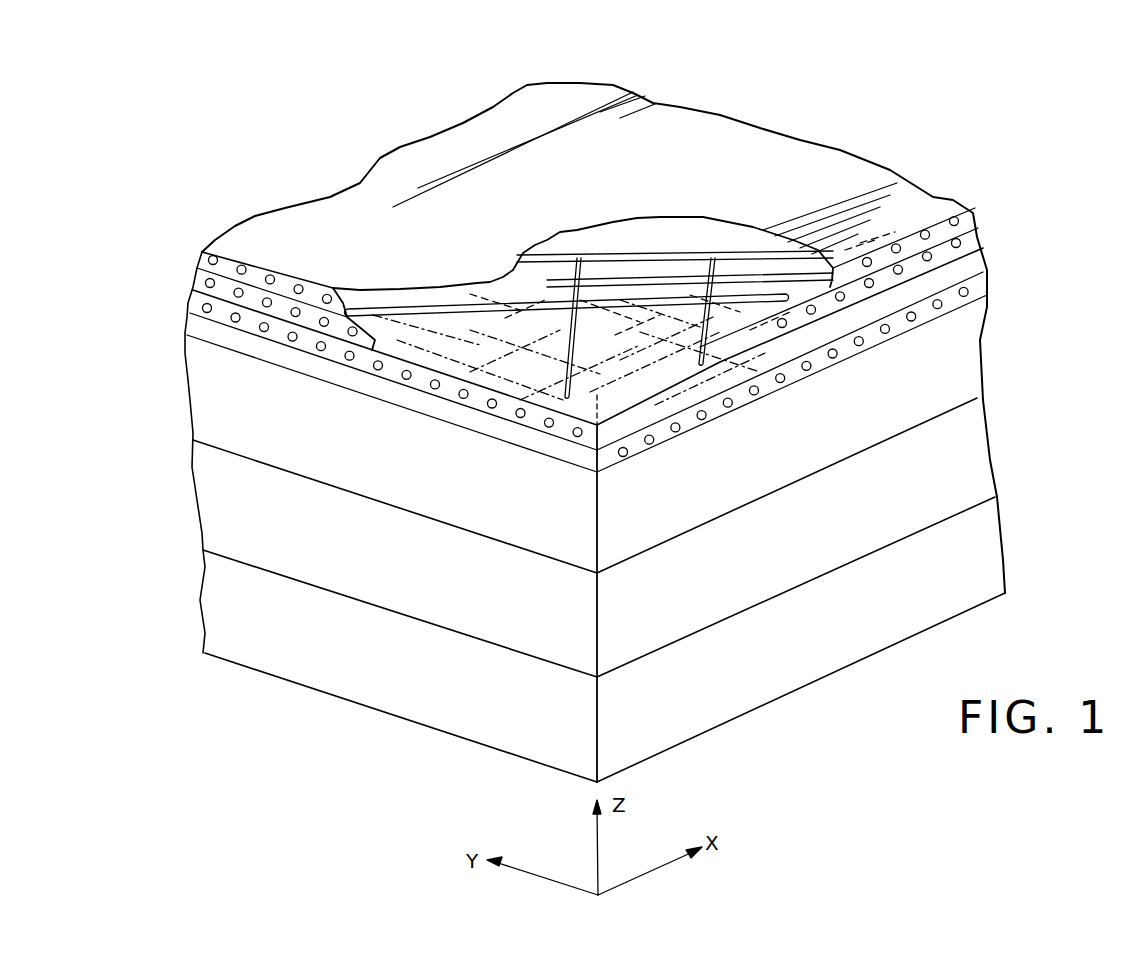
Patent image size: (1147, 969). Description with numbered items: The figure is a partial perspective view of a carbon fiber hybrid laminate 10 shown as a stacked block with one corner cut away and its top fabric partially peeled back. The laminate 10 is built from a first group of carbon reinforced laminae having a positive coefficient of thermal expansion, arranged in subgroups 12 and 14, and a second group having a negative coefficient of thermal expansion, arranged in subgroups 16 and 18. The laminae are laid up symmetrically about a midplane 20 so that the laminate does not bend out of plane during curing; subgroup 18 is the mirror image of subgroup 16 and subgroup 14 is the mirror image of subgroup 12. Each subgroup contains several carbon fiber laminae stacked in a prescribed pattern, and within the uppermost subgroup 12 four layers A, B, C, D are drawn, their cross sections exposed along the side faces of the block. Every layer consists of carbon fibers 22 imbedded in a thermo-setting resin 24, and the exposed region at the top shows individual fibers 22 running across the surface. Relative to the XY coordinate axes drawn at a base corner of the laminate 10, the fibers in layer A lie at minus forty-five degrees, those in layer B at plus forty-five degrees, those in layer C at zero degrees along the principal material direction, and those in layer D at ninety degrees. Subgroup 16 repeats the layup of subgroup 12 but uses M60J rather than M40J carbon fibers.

The carbon fiber hybrid laminate 10 is at (640, 432).
The subgroup 12 is at (594, 332).
The subgroup 14 is at (970, 517).
The subgroup 16 is at (983, 327).
The subgroup 18 is at (965, 433).
The midplane 20 is at (783, 487).
The carbon fibers 22 is at (452, 307).
The thermo-setting resin 24 is at (937, 222).
The layer A is at (202, 253).
The layer B is at (197, 282).
The layer C is at (193, 303).
The layer D is at (189, 327).